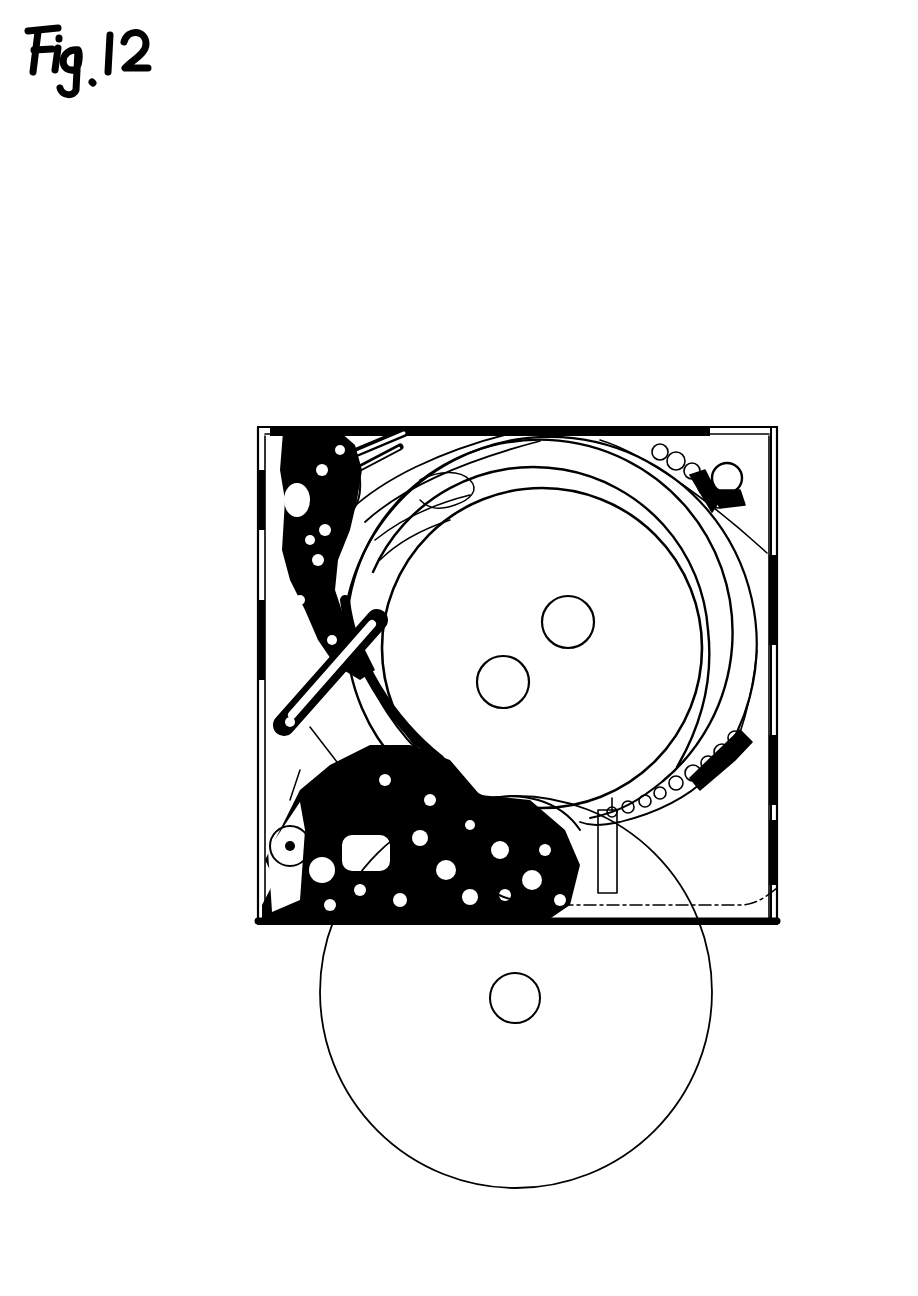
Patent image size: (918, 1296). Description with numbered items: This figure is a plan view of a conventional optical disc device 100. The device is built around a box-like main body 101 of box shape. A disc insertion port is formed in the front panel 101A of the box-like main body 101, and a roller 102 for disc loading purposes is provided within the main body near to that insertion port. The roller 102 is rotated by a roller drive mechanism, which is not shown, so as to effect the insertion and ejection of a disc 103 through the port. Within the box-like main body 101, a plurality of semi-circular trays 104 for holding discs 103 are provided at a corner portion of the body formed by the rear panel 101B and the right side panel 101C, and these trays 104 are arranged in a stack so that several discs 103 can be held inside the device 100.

The optical disc device 100 is at (782, 396).
The box-like main body 101 is at (777, 768).
The front panel 101A is at (733, 924).
The rear panel 101B is at (541, 426).
The right side panel 101C is at (777, 497).
The roller 102 is at (778, 887).
The disc 103 is at (688, 1072).
The semi-circular trays 104 is at (613, 497).